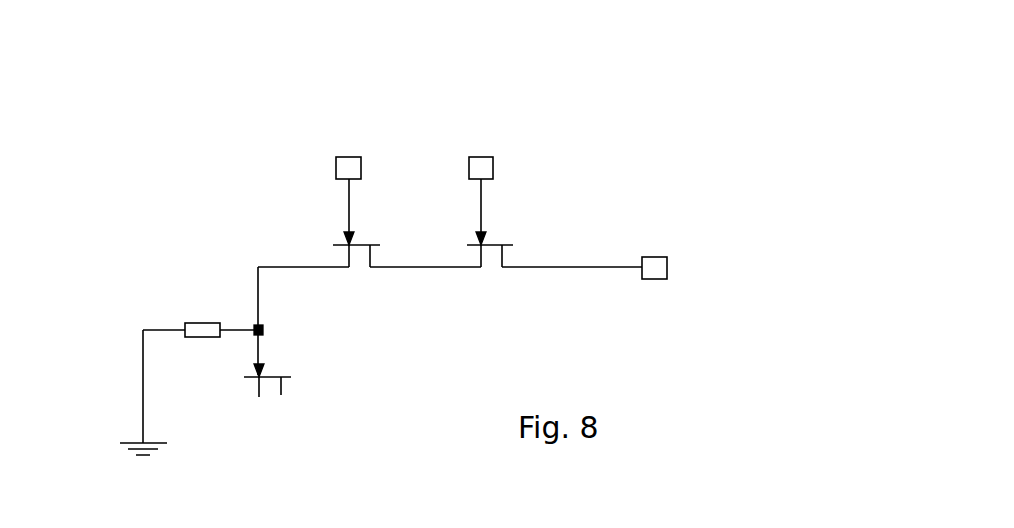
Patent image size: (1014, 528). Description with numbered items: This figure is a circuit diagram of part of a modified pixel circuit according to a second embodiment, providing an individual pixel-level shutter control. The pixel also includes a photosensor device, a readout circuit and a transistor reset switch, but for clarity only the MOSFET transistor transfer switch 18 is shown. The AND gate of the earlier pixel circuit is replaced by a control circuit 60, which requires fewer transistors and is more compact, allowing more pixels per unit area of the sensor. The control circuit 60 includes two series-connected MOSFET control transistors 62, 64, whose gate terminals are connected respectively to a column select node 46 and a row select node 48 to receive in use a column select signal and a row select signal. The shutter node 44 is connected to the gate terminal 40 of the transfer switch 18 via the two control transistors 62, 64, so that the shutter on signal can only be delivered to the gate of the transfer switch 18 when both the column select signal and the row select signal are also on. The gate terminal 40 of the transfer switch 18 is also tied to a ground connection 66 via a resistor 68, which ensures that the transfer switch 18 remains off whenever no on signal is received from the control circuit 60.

The control circuit 60 is at (619, 117).
The column select node 46 is at (345, 165).
The row select node 48 is at (480, 165).
The MOSFET control transistor 62 is at (340, 243).
The MOSFET control transistor 64 is at (508, 243).
The shutter node 44 is at (652, 257).
The resistor 68 is at (203, 324).
The ground connection 66 is at (128, 442).
The gate terminal 40 is at (261, 348).
The transfer switch 18 is at (283, 395).